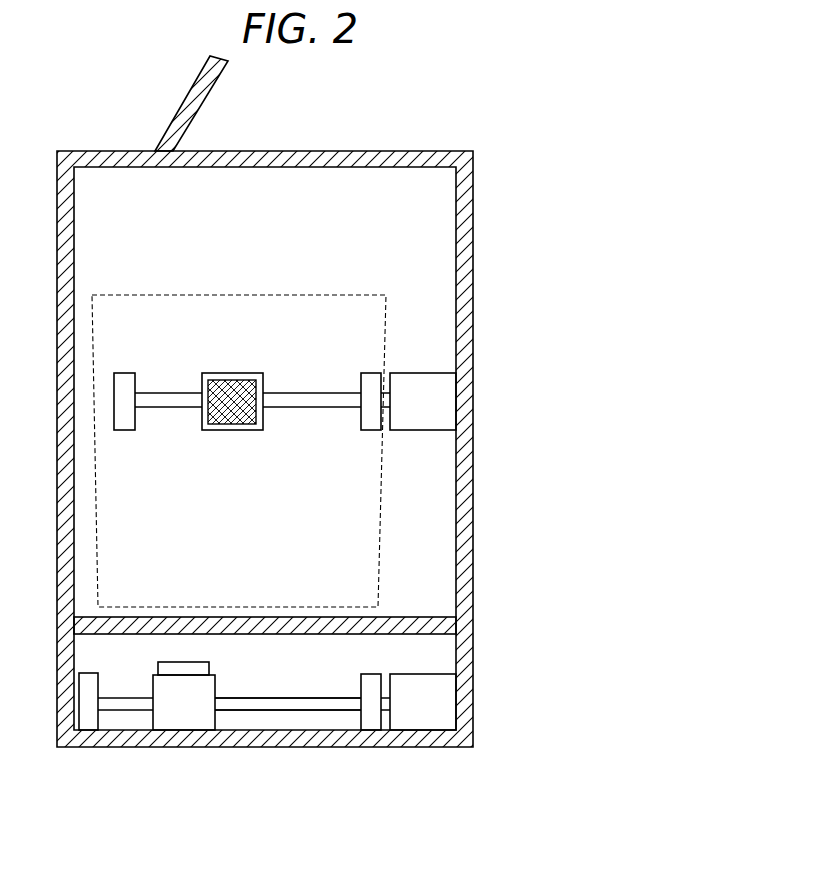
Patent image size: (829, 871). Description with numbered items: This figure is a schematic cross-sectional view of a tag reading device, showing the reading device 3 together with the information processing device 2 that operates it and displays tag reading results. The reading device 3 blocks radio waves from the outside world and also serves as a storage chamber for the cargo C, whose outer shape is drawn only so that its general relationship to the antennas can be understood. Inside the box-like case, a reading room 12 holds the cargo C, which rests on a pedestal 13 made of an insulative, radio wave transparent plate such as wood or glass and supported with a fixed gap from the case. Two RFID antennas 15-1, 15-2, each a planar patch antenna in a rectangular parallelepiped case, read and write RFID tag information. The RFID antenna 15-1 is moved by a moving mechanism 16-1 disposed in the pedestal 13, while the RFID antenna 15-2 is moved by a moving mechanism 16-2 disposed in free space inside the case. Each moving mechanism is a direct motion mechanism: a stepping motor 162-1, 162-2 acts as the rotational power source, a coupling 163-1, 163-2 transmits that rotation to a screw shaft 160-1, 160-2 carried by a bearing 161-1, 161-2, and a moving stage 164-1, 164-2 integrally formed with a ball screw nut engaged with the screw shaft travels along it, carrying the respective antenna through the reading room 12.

The information processing device 2 is at (205, 110).
The reading device 3 is at (383, 151).
The reading room 12 is at (422, 198).
The pedestal 13 is at (420, 617).
The cargo C is at (285, 295).
The RFID antenna 15-1 is at (197, 668).
The RFID antenna 15-2 is at (200, 378).
The moving mechanism 16-1 is at (258, 713).
The moving mechanism 16-2 is at (182, 412).
The screw shaft 160-1 is at (306, 712).
The screw shaft 160-2 is at (306, 407).
The bearing 161-1 is at (90, 730).
The bearing 161-2 is at (125, 420).
The stepping motor 162-1 is at (443, 710).
The stepping motor 162-2 is at (443, 404).
The coupling 163-1 is at (370, 730).
The coupling 163-2 is at (366, 378).
The moving stage 164-1 is at (183, 730).
The moving stage 164-2 is at (236, 373).